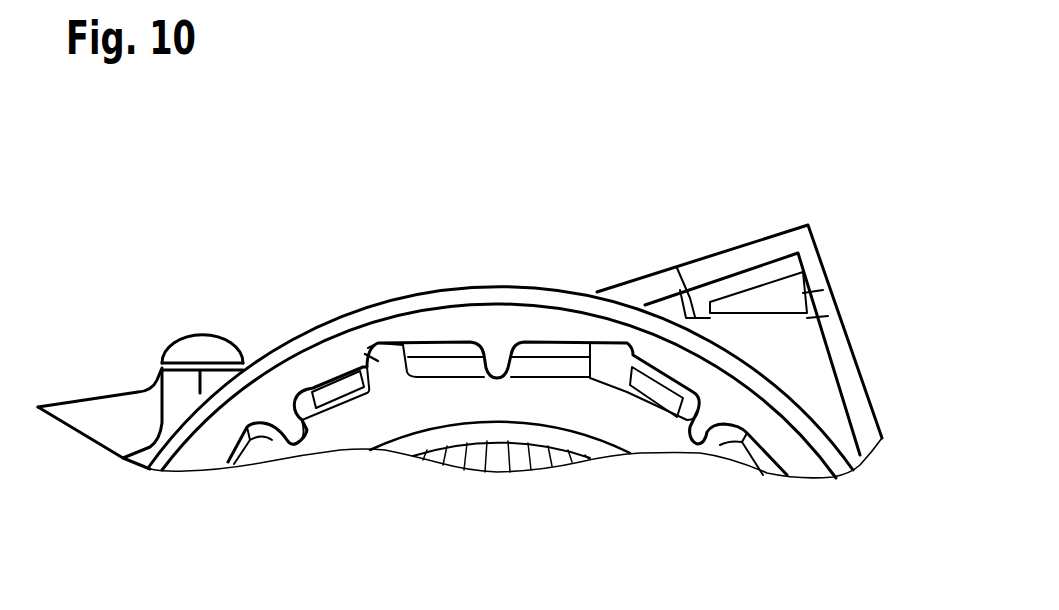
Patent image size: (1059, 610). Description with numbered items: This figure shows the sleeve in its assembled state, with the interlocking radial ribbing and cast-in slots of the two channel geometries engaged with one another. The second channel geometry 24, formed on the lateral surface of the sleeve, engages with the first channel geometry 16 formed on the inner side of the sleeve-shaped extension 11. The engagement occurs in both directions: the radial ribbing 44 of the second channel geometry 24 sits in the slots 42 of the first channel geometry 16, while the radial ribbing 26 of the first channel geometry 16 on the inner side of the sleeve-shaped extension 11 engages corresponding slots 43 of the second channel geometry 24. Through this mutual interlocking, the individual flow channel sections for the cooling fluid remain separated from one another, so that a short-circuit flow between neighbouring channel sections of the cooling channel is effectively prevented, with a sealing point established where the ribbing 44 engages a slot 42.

The sleeve-shaped extension 11 is at (257, 370).
The first channel geometry 16 is at (307, 373).
The slots of the first channel geometry 42 is at (370, 355).
The radial ribbing of the second channel geometry 44 is at (362, 352).
The radial ribbing of the first channel geometry 26 is at (497, 372).
The slots of the second channel geometry 43 is at (497, 390).
The second channel geometry 24 is at (512, 397).